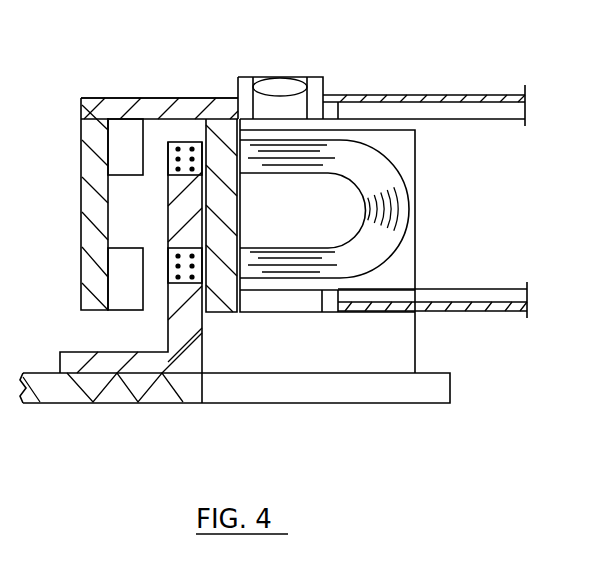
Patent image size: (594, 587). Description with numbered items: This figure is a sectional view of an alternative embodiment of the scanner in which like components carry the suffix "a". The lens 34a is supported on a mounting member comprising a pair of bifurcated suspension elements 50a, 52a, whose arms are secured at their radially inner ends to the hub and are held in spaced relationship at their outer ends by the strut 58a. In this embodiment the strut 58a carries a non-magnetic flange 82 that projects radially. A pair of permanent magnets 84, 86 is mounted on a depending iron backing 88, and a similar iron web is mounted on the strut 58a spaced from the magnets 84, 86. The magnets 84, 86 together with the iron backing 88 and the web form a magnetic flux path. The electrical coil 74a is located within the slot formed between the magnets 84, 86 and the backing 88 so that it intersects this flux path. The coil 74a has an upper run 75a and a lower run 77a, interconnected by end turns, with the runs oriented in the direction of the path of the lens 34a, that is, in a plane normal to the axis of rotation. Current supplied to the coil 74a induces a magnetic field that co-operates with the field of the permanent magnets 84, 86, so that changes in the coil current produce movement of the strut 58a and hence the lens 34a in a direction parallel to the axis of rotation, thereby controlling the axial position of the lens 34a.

The non-magnetic flange 82 is at (163, 110).
The permanent magnet 84 is at (112, 170).
The permanent magnet 86 is at (112, 283).
The iron backing 88 is at (92, 216).
The electrical coil 74a is at (171, 226).
The upper run of coil 75a is at (183, 143).
The lower run of coil 77a is at (204, 286).
The strut 58a is at (229, 211).
The lens 34a is at (283, 88).
The bifurcated suspension element 50a is at (408, 95).
The bifurcated suspension element 52a is at (498, 311).